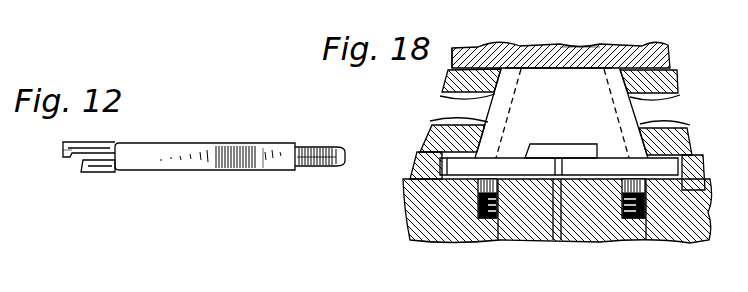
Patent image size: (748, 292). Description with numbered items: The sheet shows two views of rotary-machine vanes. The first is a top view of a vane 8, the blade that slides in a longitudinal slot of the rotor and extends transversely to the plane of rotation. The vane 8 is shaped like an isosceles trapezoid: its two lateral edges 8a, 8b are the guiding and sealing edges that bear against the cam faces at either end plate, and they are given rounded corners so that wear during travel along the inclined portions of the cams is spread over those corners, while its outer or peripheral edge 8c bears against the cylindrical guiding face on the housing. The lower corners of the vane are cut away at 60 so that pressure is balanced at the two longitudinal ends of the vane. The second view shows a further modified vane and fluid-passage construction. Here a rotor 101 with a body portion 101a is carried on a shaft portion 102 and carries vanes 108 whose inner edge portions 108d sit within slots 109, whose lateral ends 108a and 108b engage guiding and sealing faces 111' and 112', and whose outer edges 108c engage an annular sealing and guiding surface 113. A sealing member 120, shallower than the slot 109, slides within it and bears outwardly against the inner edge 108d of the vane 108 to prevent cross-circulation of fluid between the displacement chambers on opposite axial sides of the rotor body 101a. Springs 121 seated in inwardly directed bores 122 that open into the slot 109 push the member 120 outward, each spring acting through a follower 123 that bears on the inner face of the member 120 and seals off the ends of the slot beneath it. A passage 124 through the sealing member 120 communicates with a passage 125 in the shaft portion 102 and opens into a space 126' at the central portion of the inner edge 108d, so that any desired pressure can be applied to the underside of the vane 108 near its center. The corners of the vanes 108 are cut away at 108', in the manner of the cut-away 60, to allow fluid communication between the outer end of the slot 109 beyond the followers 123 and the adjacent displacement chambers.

In FIG. 12, the vane 8 is at (209, 145).
In FIG. 12, the lateral edge 8a is at (101, 156).
In FIG. 12, the lateral edge 8b is at (306, 146).
In FIG. 12, the outer edge 8c is at (273, 169).
In FIG. 12, the cut-away corner 60 is at (66, 156).
In FIG. 18, the rotor 101 is at (419, 153).
In FIG. 18, the rotor body portion 101a is at (599, 67).
In FIG. 18, the shaft portion 102 is at (542, 244).
In FIG. 18, the vane 108 is at (562, 113).
In FIG. 18, the cut-away corner 108' is at (555, 112).
In FIG. 18, the lateral end 108a is at (490, 105).
In FIG. 18, the lateral end 108b is at (627, 106).
In FIG. 18, the outer edge 108c is at (553, 72).
In FIG. 18, the inner edge portion 108d is at (512, 157).
In FIG. 18, the slot 109 is at (436, 141).
In FIG. 18, the guiding and sealing face 111' is at (480, 41).
In FIG. 18, the guiding and sealing face 112' is at (561, 44).
In FIG. 18, the annular sealing and guiding surface 113 is at (528, 67).
In FIG. 18, the sealing member 120 is at (552, 173).
In FIG. 18, the spring 121 is at (484, 218).
In FIG. 18, the bore 122 is at (496, 213).
In FIG. 18, the follower 123 is at (470, 188).
In FIG. 18, the passage 124 is at (548, 241).
In FIG. 18, the passage 125 is at (587, 242).
In FIG. 18, the space 126' is at (561, 151).